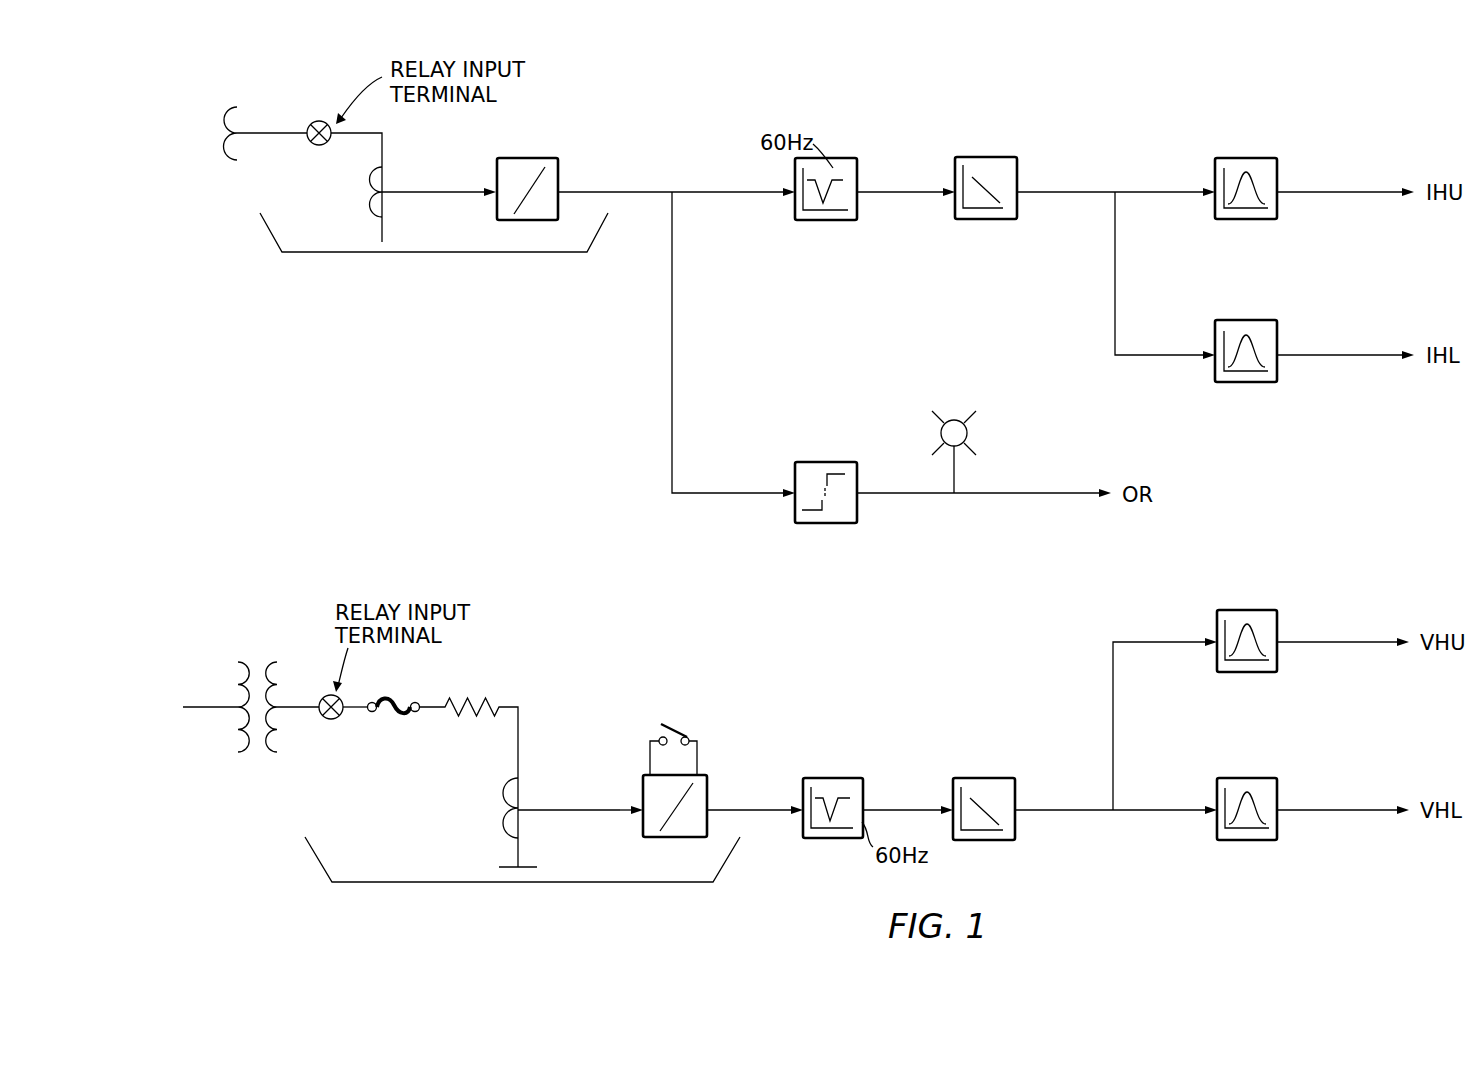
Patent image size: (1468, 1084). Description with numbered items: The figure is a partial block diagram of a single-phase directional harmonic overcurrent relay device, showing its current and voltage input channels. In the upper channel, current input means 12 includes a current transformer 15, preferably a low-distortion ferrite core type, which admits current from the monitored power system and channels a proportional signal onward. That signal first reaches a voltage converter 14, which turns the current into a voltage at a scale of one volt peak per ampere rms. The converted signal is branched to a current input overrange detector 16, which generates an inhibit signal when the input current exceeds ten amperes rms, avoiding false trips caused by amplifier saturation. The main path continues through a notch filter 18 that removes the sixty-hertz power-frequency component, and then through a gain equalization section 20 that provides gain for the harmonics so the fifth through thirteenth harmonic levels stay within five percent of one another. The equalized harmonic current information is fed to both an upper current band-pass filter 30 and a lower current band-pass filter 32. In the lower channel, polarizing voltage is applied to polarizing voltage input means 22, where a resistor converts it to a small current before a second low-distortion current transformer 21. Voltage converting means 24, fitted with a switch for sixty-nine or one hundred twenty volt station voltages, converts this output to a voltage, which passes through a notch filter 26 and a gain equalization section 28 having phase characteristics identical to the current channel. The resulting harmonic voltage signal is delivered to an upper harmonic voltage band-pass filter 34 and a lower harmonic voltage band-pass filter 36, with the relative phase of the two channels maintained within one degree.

The current input means 12 is at (416, 197).
The voltage converter 14 is at (553, 158).
The current transformer 15 is at (368, 202).
The current input overrange detector 16 is at (822, 523).
The notch filter 18 is at (831, 161).
The gain equalization section 20 is at (991, 157).
The second low distortion current transformer 21 is at (525, 779).
The polarizing voltage input means 22 is at (461, 794).
The voltage converting means 24 is at (708, 784).
The notch filter 26 is at (845, 778).
The gain equalization section 28 is at (996, 778).
The upper current band-pass filter 30 is at (1255, 158).
The lower current band-pass filter 32 is at (1250, 320).
The upper harmonic voltage band-pass filter 34 is at (1252, 610).
The lower harmonic voltage band-pass filter 36 is at (1256, 842).